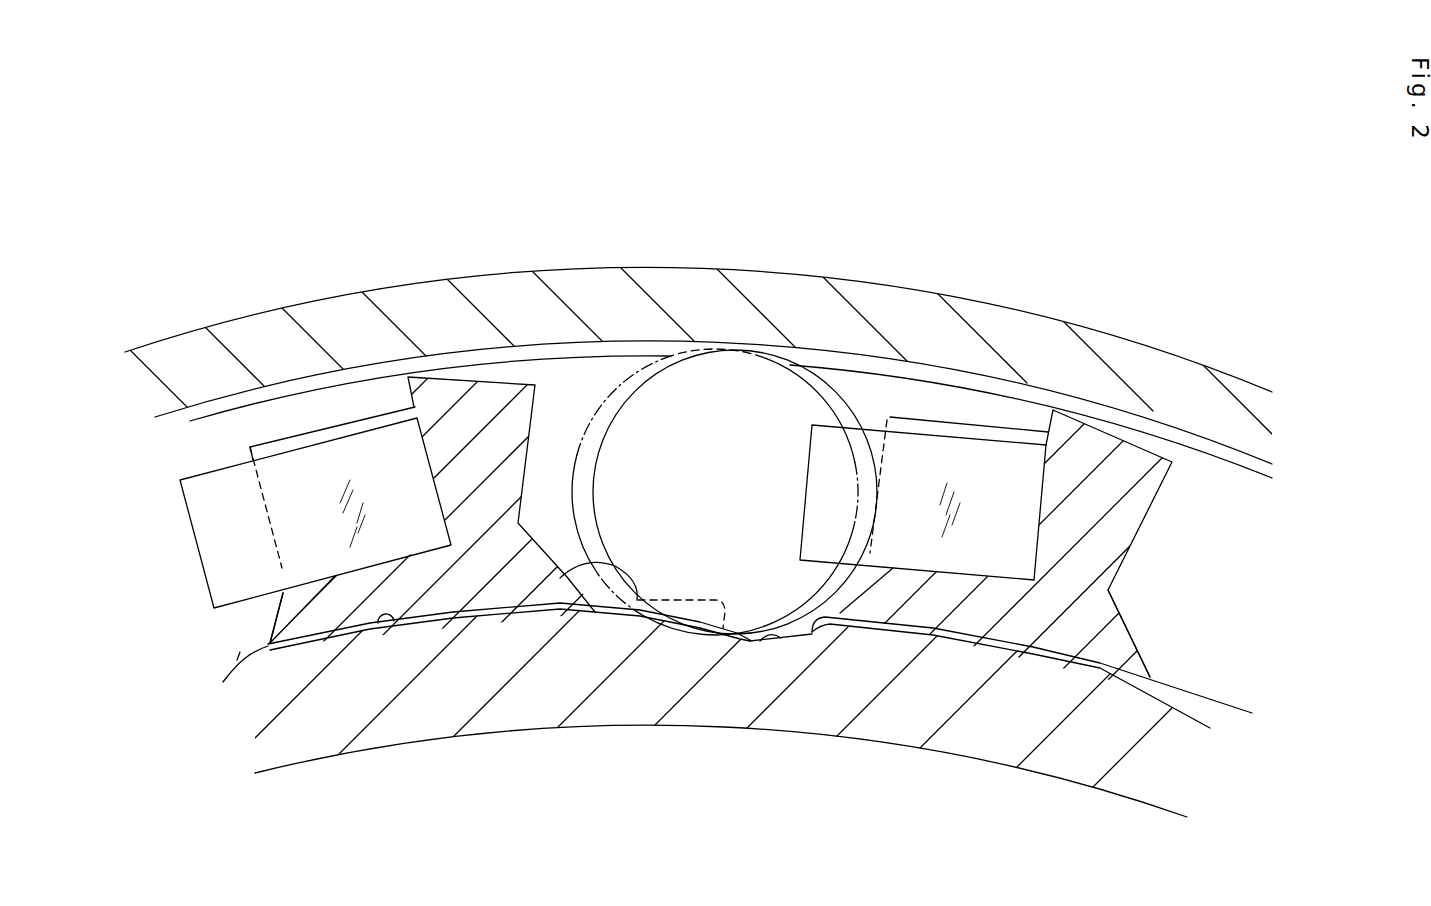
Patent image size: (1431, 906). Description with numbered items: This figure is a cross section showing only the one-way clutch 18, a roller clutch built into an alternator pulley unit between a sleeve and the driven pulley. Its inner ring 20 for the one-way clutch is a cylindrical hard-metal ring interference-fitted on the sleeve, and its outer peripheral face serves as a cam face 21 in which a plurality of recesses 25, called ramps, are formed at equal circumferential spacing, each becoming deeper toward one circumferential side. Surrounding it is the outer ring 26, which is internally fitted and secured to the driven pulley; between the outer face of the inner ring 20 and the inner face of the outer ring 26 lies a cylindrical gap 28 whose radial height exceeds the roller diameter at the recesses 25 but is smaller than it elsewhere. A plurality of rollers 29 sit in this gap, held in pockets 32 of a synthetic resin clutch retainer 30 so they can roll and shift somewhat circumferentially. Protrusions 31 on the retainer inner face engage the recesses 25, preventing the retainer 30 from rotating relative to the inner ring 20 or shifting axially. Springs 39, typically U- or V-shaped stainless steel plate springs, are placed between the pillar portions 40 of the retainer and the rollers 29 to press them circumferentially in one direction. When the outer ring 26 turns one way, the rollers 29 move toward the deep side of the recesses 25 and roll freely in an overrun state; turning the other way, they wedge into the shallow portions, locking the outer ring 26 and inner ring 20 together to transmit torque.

The one-way clutch 18 is at (812, 270).
The inner ring for the one-way clutch 20 is at (530, 718).
The cam face 21 is at (378, 623).
The recesses 25 is at (237, 680).
The outer ring 26 is at (500, 285).
The cylindrical gap 28 is at (992, 390).
The rollers 29 is at (640, 362).
The clutch retainer 30 is at (1073, 620).
The protrusions 31 is at (237, 660).
The pockets 32 is at (273, 622).
The springs 39 is at (213, 540).
The pillar portions 40 is at (450, 392).